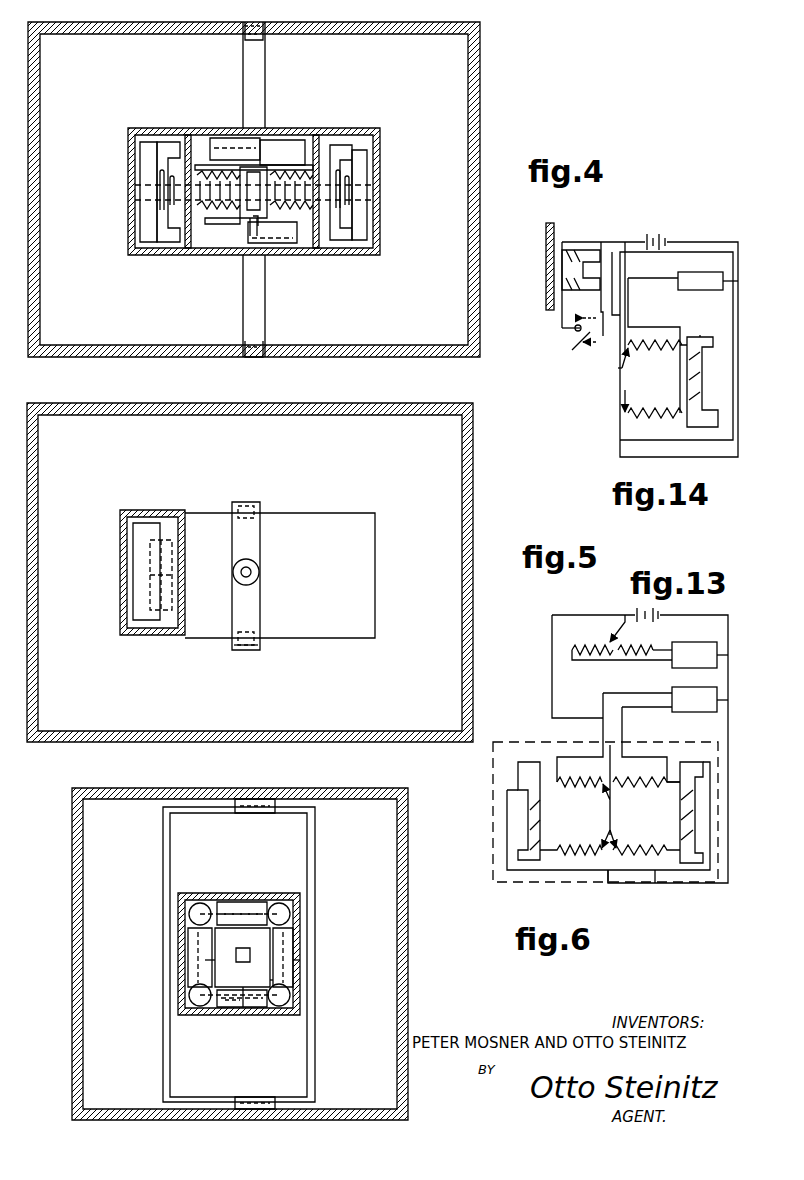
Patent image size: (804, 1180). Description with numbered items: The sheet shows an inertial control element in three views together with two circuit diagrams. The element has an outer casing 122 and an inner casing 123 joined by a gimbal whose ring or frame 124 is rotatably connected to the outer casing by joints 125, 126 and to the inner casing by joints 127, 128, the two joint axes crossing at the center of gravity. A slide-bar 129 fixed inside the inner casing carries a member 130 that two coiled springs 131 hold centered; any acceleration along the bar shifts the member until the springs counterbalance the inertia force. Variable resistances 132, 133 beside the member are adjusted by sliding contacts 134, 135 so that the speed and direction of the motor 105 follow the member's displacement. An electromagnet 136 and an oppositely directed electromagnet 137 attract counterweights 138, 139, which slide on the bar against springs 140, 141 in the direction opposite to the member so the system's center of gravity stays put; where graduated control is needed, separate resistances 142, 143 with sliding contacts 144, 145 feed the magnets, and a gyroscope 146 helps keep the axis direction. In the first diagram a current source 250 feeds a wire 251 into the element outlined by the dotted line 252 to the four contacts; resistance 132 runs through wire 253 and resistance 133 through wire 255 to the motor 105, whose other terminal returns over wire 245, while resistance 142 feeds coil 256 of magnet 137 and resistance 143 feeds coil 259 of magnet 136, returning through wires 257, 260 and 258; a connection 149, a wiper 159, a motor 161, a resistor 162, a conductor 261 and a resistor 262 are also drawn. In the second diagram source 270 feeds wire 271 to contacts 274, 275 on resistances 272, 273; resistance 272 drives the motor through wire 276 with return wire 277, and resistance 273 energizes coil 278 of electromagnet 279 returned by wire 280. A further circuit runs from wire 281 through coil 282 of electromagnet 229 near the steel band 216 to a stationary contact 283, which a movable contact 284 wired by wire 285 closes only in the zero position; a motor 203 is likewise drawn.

In FIG. 4, the outer casing 122 is at (472, 50).
In FIG. 5, the outer casing 122 is at (472, 432).
In FIG. 6, the outer casing 122 is at (405, 842).
In FIG. 4, the inner casing 123 is at (375, 133).
In FIG. 5, the inner casing 123 is at (280, 575).
In FIG. 6, the inner casing 123 is at (298, 912).
In FIG. 4, the ring or frame 124 is at (258, 92).
In FIG. 5, the ring or frame 124 is at (260, 506).
In FIG. 6, the ring or frame 124 is at (315, 868).
In FIG. 4, the joints 125 is at (246, 34).
In FIG. 5, the joints 125 is at (252, 570).
In FIG. 6, the joints 125 is at (252, 812).
In FIG. 4, the joints 126 is at (254, 345).
In FIG. 6, the joints 126 is at (262, 1076).
In FIG. 5, the joints 127 is at (246, 506).
In FIG. 6, the joints 127 is at (188, 962).
In FIG. 5, the joints 128 is at (246, 648).
In FIG. 6, the joints 128 is at (300, 985).
In FIG. 4, the slide-bar 129 is at (308, 142).
In FIG. 5, the slide-bar 129 is at (160, 594).
In FIG. 6, the slide-bar 129 is at (288, 928).
In FIG. 4, the member 130 is at (240, 216).
In FIG. 6, the member 130 is at (248, 946).
In FIG. 4, the coiled springs 131 is at (199, 172).
In FIG. 4, the variable resistance 132 is at (235, 149).
In FIG. 6, the variable resistance 132 is at (230, 905).
In FIG. 13, the variable resistance 132 is at (578, 790).
In FIG. 4, the variable resistance 133 is at (272, 232).
In FIG. 6, the variable resistance 133 is at (222, 1006).
In FIG. 13, the variable resistance 133 is at (644, 848).
In FIG. 4, the sliding contact 134 is at (276, 162).
In FIG. 6, the sliding contact 134 is at (248, 930).
In FIG. 13, the sliding contact 134 is at (606, 796).
In FIG. 4, the sliding contact 135 is at (250, 236).
In FIG. 6, the sliding contact 135 is at (242, 1006).
In FIG. 13, the sliding contact 135 is at (627, 838).
In FIG. 4, the electromagnet 136 is at (336, 238).
In FIG. 13, the electromagnet 136 is at (700, 762).
In FIG. 4, the electromagnet 137 is at (163, 246).
In FIG. 5, the electromagnet 137 is at (165, 540).
In FIG. 13, the electromagnet 137 is at (530, 762).
In FIG. 4, the counterweight 138 is at (360, 181).
In FIG. 4, the counterweight 139 is at (142, 212).
In FIG. 5, the counterweight 139 is at (135, 538).
In FIG. 4, the spring 140 is at (350, 206).
In FIG. 4, the spring 141 is at (158, 178).
In FIG. 4, the resistance 142 is at (208, 246).
In FIG. 6, the resistance 142 is at (202, 972).
In FIG. 13, the resistance 142 is at (580, 846).
In FIG. 6, the resistance 143 is at (292, 944).
In FIG. 6, the sliding contact 144 is at (188, 928).
In FIG. 13, the sliding contact 144 is at (605, 834).
In FIG. 4, the sliding contact 145 is at (262, 226).
In FIG. 6, the sliding contact 145 is at (284, 995).
In FIG. 13, the sliding contact 145 is at (640, 793).
In FIG. 4, the gyroscope 146 is at (283, 152).
In FIG. 6, the gyroscope 146 is at (198, 912).
In FIG. 13, the connection 149 is at (664, 784).
In FIG. 13, the wiper 159 is at (606, 636).
In FIG. 13, the motor 161 is at (698, 648).
In FIG. 13, the resistor 162 is at (636, 656).
In FIG. 13, the motor 105 is at (686, 712).
In FIG. 13, the wire 245 is at (716, 610).
In FIG. 13, the electric current source 250 is at (652, 605).
In FIG. 13, the wire or conductor 251 is at (552, 684).
In FIG. 13, the dotted line 252 is at (605, 803).
In FIG. 13, the wire 253 is at (600, 732).
In FIG. 13, the wire 255 is at (622, 734).
In FIG. 13, the coil 256 is at (538, 820).
In FIG. 13, the wire 257 is at (556, 870).
In FIG. 13, the wire 258 is at (608, 884).
In FIG. 13, the coil 259 is at (694, 800).
In FIG. 13, the wire 260 is at (656, 884).
In FIG. 13, the conductor 261 is at (660, 648).
In FIG. 13, the resistor 262 is at (594, 660).
In FIG. 14, the steel band 216 is at (546, 268).
In FIG. 14, the motor 203 is at (692, 290).
In FIG. 14, the electromagnet 229 is at (590, 290).
In FIG. 14, the electric current source 270 is at (668, 228).
In FIG. 14, the wire 271 is at (622, 355).
In FIG. 14, the resistance 272 is at (655, 405).
In FIG. 14, the resistance 273 is at (636, 350).
In FIG. 14, the sliding contact 274 is at (622, 404).
In FIG. 14, the sliding contact 275 is at (622, 370).
In FIG. 14, the wire 276 is at (632, 300).
In FIG. 14, the wire 277 is at (700, 242).
In FIG. 14, the coil 278 is at (700, 364).
In FIG. 14, the electromagnet 279 is at (702, 337).
In FIG. 14, the wire 280 is at (620, 444).
In FIG. 14, the wire 281 is at (606, 242).
In FIG. 14, the coil 282 is at (568, 244).
In FIG. 14, the contact 283 is at (576, 330).
In FIG. 14, the contact 284 is at (574, 348).
In FIG. 14, the wire 285 is at (674, 254).